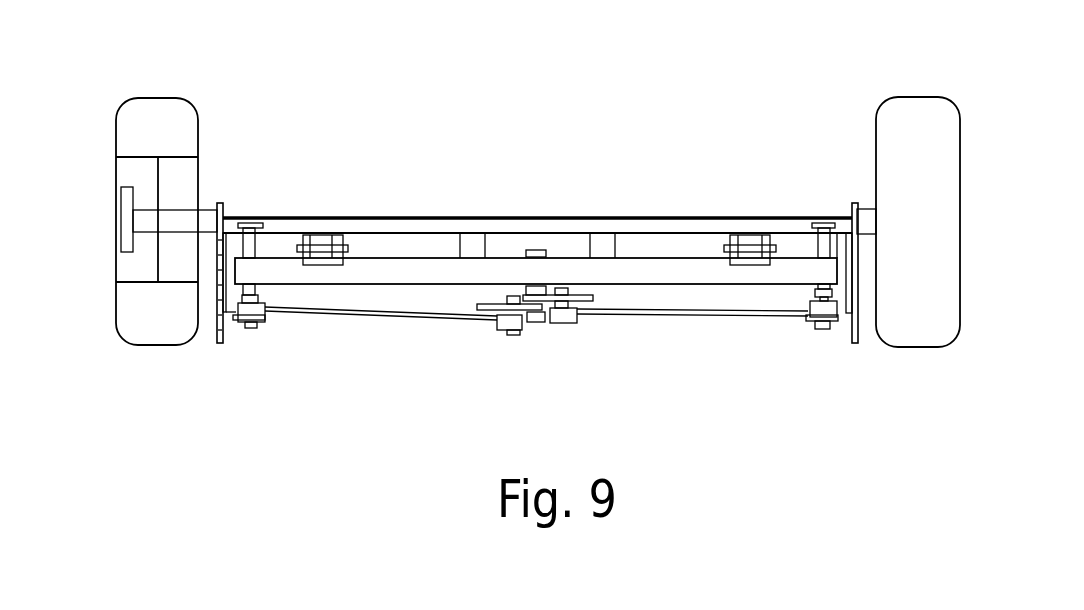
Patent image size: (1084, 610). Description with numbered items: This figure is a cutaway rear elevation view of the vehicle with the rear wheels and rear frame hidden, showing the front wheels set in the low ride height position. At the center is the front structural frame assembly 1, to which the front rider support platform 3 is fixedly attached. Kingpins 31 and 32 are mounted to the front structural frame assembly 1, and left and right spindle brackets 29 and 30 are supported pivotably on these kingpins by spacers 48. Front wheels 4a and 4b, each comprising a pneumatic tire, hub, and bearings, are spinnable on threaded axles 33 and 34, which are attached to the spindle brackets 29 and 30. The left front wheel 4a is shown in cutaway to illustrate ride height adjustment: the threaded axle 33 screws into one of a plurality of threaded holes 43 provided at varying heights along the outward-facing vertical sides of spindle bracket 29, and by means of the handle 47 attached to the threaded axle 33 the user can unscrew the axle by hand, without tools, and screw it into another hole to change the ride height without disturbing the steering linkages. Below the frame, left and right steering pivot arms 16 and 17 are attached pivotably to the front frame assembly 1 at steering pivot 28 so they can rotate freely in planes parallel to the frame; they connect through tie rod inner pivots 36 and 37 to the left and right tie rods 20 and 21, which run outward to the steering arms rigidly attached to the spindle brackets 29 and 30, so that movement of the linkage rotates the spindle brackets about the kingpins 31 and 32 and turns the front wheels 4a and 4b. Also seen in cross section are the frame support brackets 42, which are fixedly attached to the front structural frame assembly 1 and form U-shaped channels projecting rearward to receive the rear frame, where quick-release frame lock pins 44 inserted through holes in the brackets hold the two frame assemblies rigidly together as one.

The front structural frame assembly 1 is at (640, 268).
The front rider support platform 3 is at (500, 225).
The front wheel 4a is at (173, 127).
The front wheel 4b is at (913, 122).
The left steering pivot arm 16 is at (507, 312).
The right steering pivot arm 17 is at (587, 298).
The left tie rod 20 is at (315, 313).
The right tie rod 21 is at (718, 312).
The steering pivot 28 is at (540, 322).
The spindle bracket 29 is at (218, 345).
The spindle bracket 30 is at (855, 343).
The kingpin 31 is at (256, 222).
The kingpin 32 is at (823, 220).
The threaded axle 33 is at (184, 222).
The threaded axle 34 is at (870, 215).
The tie rod inner pivot 36 is at (512, 335).
The tie rod inner pivot 37 is at (560, 323).
The frame support bracket 42 is at (755, 265).
The threaded holes 43 is at (217, 250).
The frame lock pin 44 is at (353, 243).
The handle 47 is at (127, 217).
The spacer 48 is at (247, 281).